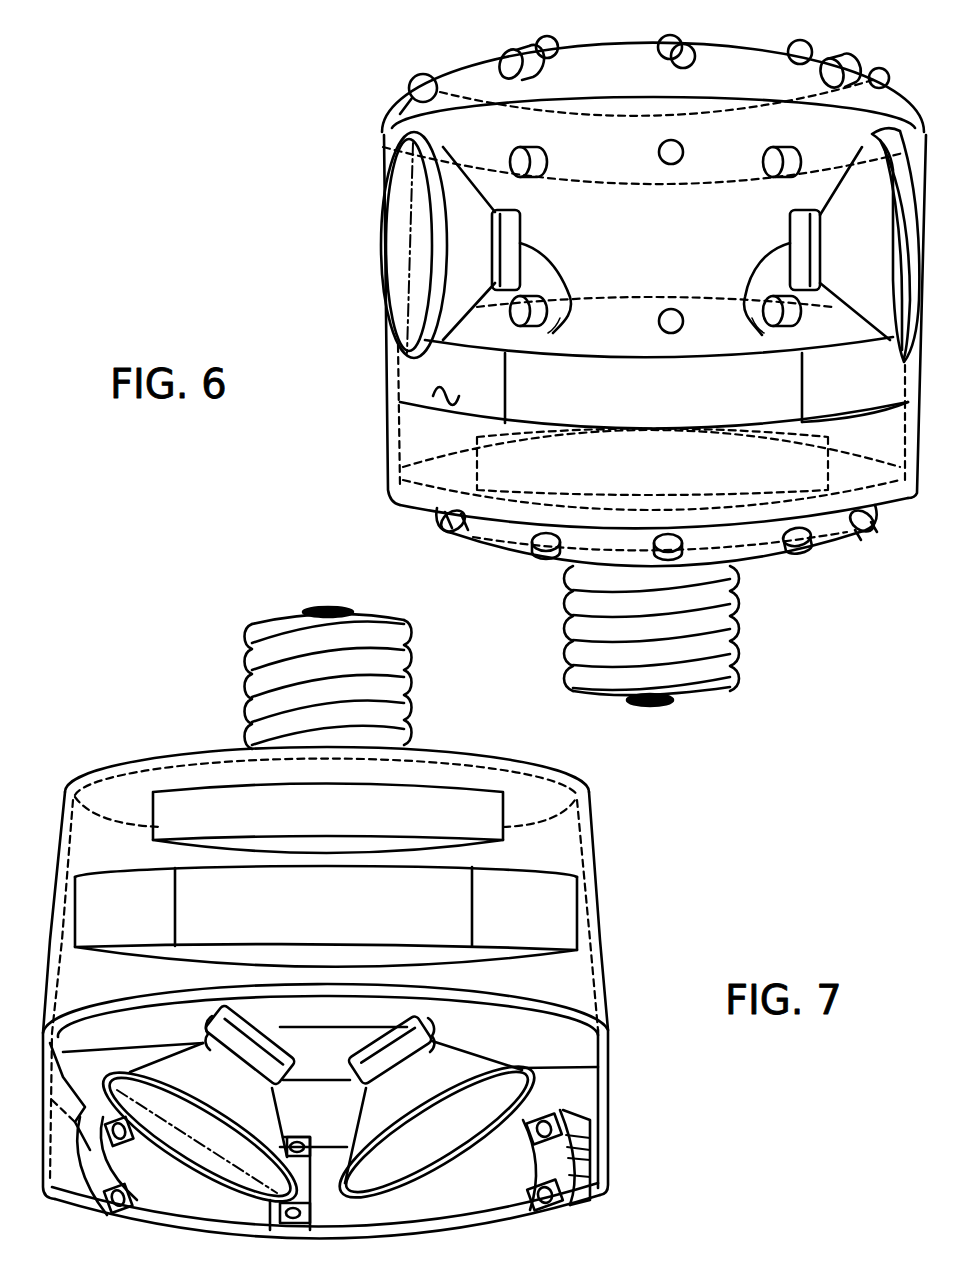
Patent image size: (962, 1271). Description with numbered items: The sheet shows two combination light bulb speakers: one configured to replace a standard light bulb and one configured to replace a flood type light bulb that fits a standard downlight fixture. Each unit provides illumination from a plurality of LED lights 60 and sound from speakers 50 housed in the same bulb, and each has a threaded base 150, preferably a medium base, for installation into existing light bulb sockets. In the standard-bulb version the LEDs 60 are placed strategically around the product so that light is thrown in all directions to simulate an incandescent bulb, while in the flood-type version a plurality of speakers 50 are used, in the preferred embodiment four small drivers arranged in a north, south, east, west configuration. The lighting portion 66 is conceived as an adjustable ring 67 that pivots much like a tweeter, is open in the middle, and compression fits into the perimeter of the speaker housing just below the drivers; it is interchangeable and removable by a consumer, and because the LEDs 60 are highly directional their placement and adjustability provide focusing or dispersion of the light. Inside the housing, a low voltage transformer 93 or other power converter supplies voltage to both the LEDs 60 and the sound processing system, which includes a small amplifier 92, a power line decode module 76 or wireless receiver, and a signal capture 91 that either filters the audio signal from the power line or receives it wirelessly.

In FIG. 6, the speaker 50 is at (382, 257).
In FIG. 7, the speaker 50 is at (520, 1070).
In FIG. 6, the LED light 60 is at (409, 86).
In FIG. 7, the LED light 60 is at (557, 1130).
In FIG. 7, the lighting portion 66 is at (577, 1173).
In FIG. 7, the adjustable ring 67 is at (583, 1120).
In FIG. 6, the power line decode module 76 is at (430, 393).
In FIG. 7, the power line decode module 76 is at (577, 912).
In FIG. 6, the signal capture 91 is at (837, 420).
In FIG. 7, the signal capture 91 is at (455, 887).
In FIG. 6, the amplifier 92 is at (527, 425).
In FIG. 7, the amplifier 92 is at (100, 892).
In FIG. 6, the low voltage transformer 93 is at (473, 470).
In FIG. 7, the low voltage transformer 93 is at (410, 787).
In FIG. 6, the threaded base 150 is at (733, 643).
In FIG. 7, the threaded base 150 is at (250, 670).